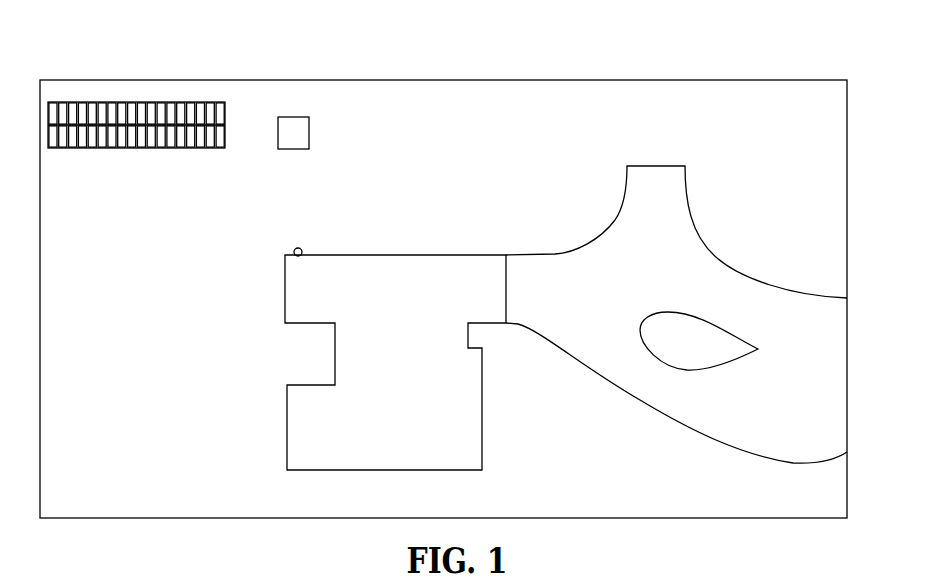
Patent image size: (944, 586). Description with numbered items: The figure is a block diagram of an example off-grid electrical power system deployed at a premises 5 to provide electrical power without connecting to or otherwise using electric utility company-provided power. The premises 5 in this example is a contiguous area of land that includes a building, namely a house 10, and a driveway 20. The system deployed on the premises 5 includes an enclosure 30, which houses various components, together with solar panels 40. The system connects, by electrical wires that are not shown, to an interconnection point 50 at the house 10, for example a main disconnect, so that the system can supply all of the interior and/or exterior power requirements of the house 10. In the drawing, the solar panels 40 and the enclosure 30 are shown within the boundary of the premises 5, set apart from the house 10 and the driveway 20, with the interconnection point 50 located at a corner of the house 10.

The premises 5 is at (85, 59).
The house 10 is at (416, 254).
The driveway 20 is at (765, 289).
The enclosure 30 is at (309, 133).
The solar panels 40 is at (128, 149).
The interconnection point 50 is at (294, 252).